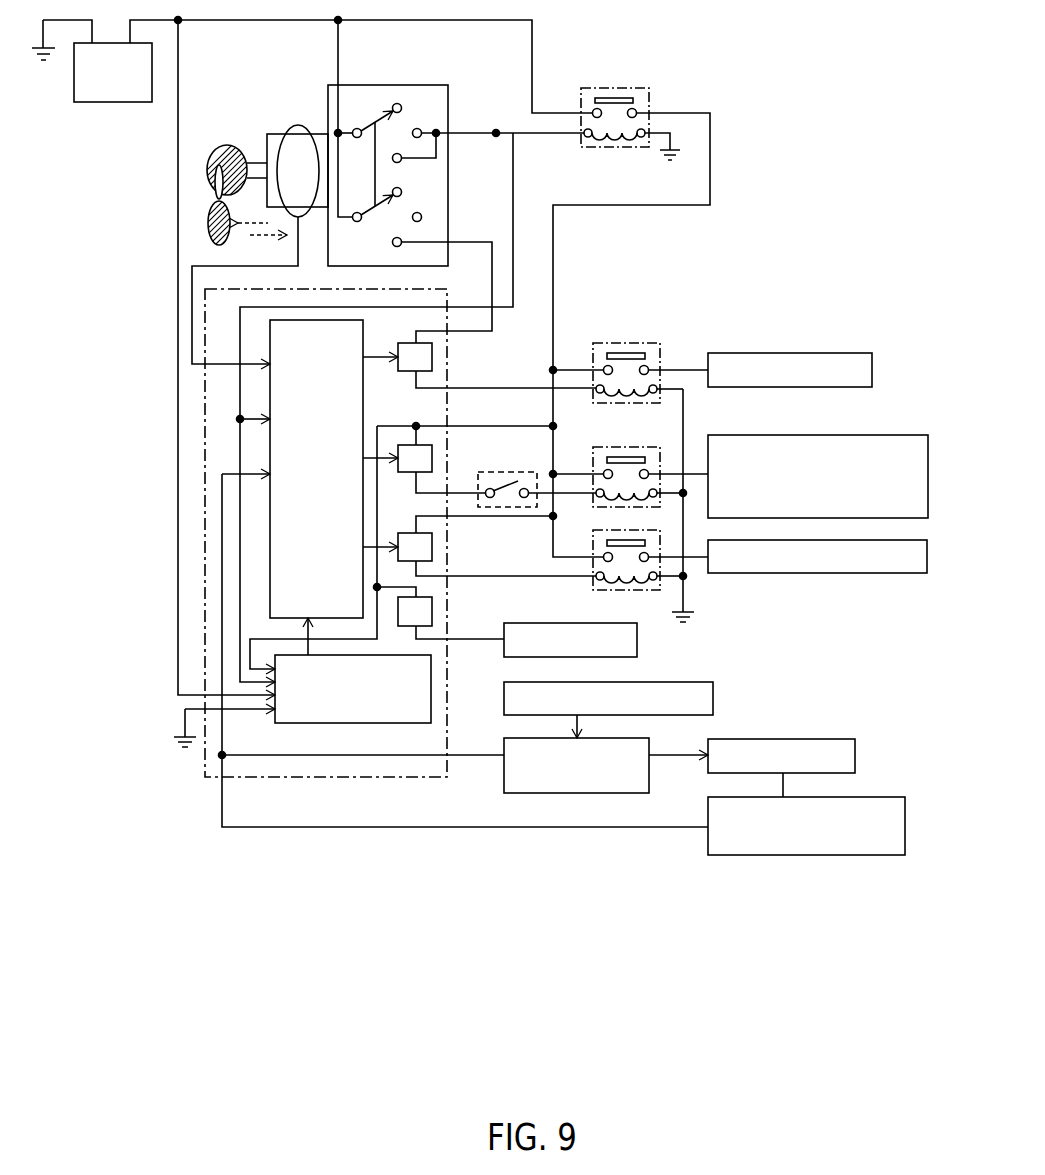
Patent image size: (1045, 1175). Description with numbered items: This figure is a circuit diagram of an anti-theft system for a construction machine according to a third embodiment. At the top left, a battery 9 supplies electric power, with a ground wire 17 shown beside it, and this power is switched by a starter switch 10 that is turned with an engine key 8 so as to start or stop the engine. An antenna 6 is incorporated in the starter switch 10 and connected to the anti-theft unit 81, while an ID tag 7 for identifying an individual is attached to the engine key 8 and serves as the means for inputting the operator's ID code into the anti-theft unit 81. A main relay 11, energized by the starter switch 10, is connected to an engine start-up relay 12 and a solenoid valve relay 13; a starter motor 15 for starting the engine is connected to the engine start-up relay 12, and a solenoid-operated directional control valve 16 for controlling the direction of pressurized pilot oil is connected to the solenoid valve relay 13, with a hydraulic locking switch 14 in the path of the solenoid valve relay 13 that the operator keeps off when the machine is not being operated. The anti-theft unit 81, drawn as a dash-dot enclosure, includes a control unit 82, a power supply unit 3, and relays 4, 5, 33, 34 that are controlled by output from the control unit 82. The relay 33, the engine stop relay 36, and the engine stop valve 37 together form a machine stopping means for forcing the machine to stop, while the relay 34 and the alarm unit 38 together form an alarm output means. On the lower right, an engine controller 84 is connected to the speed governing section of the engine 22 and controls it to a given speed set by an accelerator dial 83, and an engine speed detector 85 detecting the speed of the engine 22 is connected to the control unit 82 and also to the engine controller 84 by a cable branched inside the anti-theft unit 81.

The power supply unit 3 is at (381, 724).
The relay 4 is at (433, 365).
The relay 5 is at (433, 462).
The antenna 6 is at (298, 125).
The ID tag 7 is at (210, 226).
The engine key 8 is at (229, 148).
The battery 9 is at (101, 103).
The starter switch 10 is at (407, 88).
The main relay 11 is at (603, 88).
The engine start-up relay 12 is at (615, 343).
The solenoid valve relay 13 is at (615, 447).
The hydraulic locking switch 14 is at (521, 480).
The starter motor 15 is at (807, 353).
The solenoid-operated directional control valve 16 is at (807, 435).
The ground wire 17 is at (39, 65).
The engine 22 is at (838, 738).
The relay 33 is at (433, 548).
The relay 34 is at (433, 618).
The engine stop relay 36 is at (637, 590).
The engine stop valve 37 is at (843, 575).
The alarm unit 38 is at (640, 645).
The anti-theft unit 81 is at (375, 778).
The control unit 82 is at (268, 553).
The accelerator dial 83 is at (714, 698).
The engine controller 84 is at (636, 793).
The engine speed detector 85 is at (845, 856).